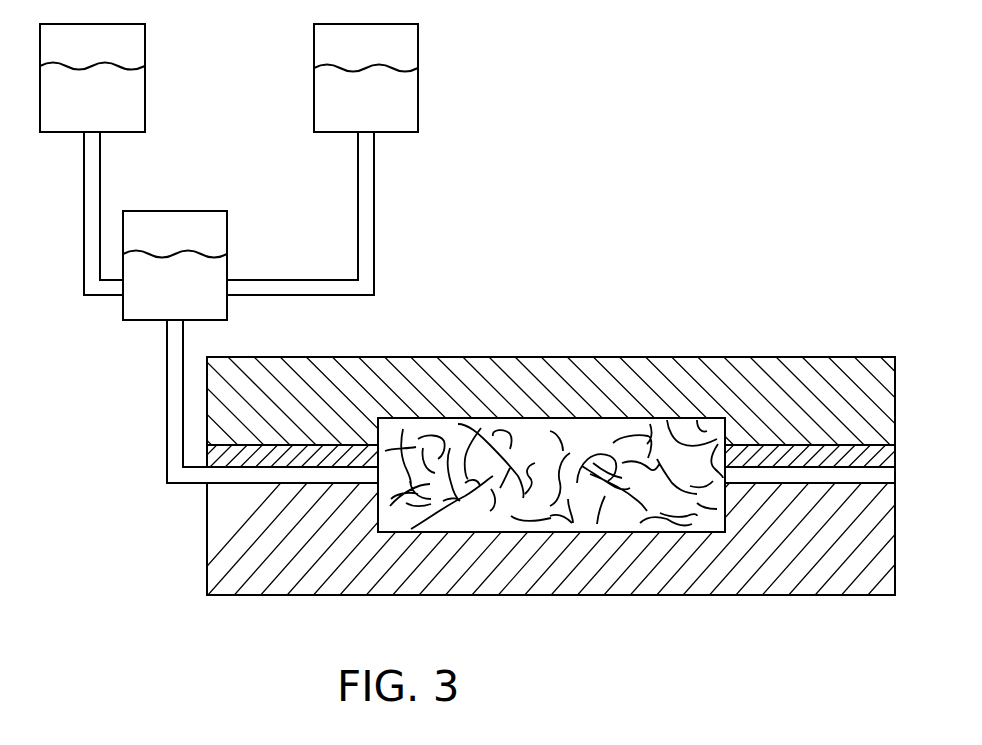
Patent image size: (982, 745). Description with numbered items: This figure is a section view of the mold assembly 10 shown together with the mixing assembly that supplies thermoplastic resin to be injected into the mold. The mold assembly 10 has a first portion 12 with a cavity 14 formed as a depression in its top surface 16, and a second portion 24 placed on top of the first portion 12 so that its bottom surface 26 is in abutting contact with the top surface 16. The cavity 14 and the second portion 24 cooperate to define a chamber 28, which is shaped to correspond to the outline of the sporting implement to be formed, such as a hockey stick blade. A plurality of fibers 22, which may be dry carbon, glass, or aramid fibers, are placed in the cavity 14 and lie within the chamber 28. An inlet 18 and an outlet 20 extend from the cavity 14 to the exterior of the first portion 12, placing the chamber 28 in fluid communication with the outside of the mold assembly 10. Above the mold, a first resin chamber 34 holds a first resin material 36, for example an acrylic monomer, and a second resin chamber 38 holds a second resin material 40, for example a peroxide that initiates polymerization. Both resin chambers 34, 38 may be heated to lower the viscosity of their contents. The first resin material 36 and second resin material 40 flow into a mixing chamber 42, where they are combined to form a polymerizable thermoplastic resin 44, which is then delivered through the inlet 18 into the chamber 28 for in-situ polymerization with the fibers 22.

The mold assembly 10 is at (714, 195).
The first portion 12 is at (548, 596).
The cavity 14 is at (385, 450).
The top surface 16 is at (288, 445).
The inlet 18 is at (225, 481).
The outlet 20 is at (850, 478).
The fibers 22 is at (572, 455).
The second portion 24 is at (797, 370).
The bottom surface 26 is at (759, 447).
The chamber 28 is at (519, 443).
The first resin chamber 34 is at (145, 43).
The first resin material 36 is at (78, 103).
The second resin chamber 38 is at (418, 75).
The second resin material 40 is at (354, 107).
The mixing chamber 42 is at (227, 228).
The thermoplastic resin 44 is at (160, 294).